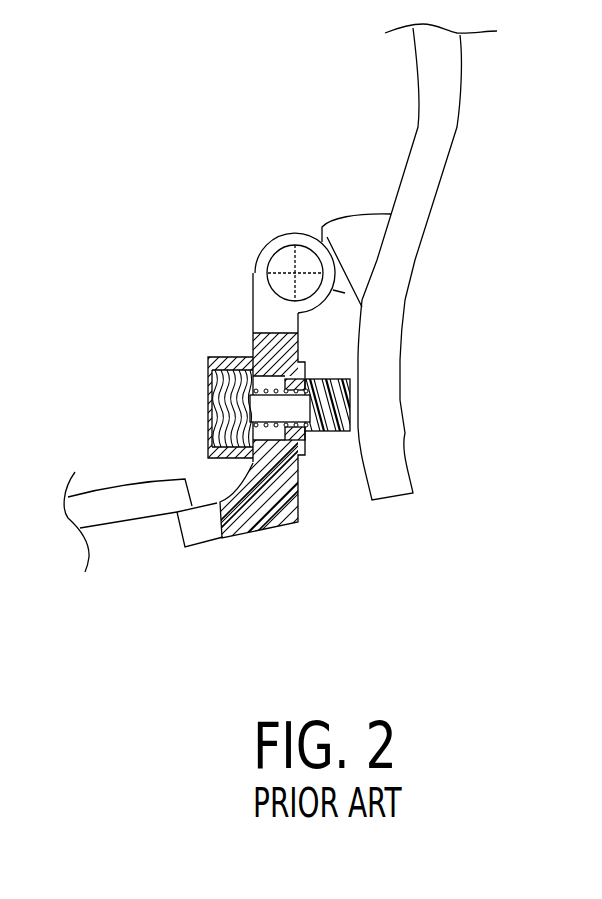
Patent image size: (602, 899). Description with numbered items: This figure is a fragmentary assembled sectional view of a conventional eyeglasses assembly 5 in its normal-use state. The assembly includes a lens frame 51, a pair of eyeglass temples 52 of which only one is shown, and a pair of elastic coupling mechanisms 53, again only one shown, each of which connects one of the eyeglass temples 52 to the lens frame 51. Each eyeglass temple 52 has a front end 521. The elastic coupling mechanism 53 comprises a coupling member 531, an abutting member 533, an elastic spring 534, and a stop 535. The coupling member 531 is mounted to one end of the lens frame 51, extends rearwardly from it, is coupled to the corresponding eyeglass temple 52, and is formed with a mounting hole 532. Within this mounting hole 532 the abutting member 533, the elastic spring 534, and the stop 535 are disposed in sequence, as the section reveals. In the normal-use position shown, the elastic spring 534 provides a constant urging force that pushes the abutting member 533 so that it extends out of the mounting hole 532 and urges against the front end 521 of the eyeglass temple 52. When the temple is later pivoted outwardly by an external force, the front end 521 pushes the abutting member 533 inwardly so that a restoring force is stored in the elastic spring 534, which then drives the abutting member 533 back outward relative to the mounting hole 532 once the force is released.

The conventional eyeglasses assembly 5 is at (95, 585).
The lens frame 51 is at (110, 508).
The eyeglass temple 52 is at (417, 207).
The front end 521 is at (387, 472).
The elastic coupling mechanism 53 is at (302, 525).
The coupling member 531 is at (300, 487).
The mounting hole 532 is at (273, 442).
The abutting member 533 is at (322, 386).
The elastic spring 534 is at (350, 410).
The stop 535 is at (212, 412).